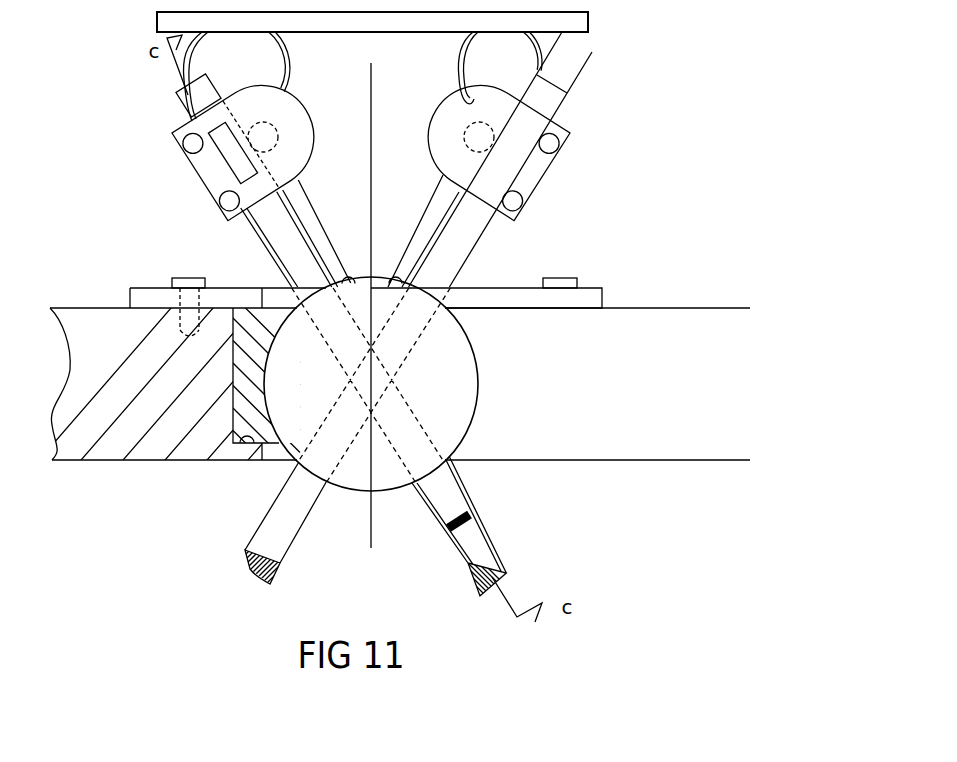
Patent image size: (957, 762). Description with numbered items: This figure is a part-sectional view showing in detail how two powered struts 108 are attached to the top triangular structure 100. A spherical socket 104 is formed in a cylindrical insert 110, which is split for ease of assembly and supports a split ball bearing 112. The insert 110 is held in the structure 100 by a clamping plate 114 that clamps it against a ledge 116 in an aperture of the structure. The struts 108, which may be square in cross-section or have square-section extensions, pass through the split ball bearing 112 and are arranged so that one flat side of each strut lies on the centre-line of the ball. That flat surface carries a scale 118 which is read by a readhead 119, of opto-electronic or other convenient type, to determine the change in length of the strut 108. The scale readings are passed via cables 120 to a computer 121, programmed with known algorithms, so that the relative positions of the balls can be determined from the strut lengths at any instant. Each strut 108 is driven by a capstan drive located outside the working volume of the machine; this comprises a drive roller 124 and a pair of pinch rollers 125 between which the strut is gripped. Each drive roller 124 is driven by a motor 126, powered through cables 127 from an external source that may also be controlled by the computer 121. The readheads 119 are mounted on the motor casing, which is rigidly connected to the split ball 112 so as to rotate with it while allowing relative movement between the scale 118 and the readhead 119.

The top triangular structure 100 is at (168, 453).
The spherical socket 104 is at (478, 383).
The struts 108 is at (488, 542).
The cylindrical insert 110 is at (250, 318).
The split ball bearing 112 is at (358, 470).
The clamping plate 114 is at (602, 298).
The ledge 116 is at (252, 457).
The scale 118 is at (470, 517).
The readhead 119 is at (233, 153).
The cables 120 is at (535, 38).
The computer 121 is at (575, 26).
The drive roller 124 is at (267, 137).
The pinch rollers 125 is at (568, 137).
The motor 126 is at (515, 148).
The cables 127 is at (462, 73).